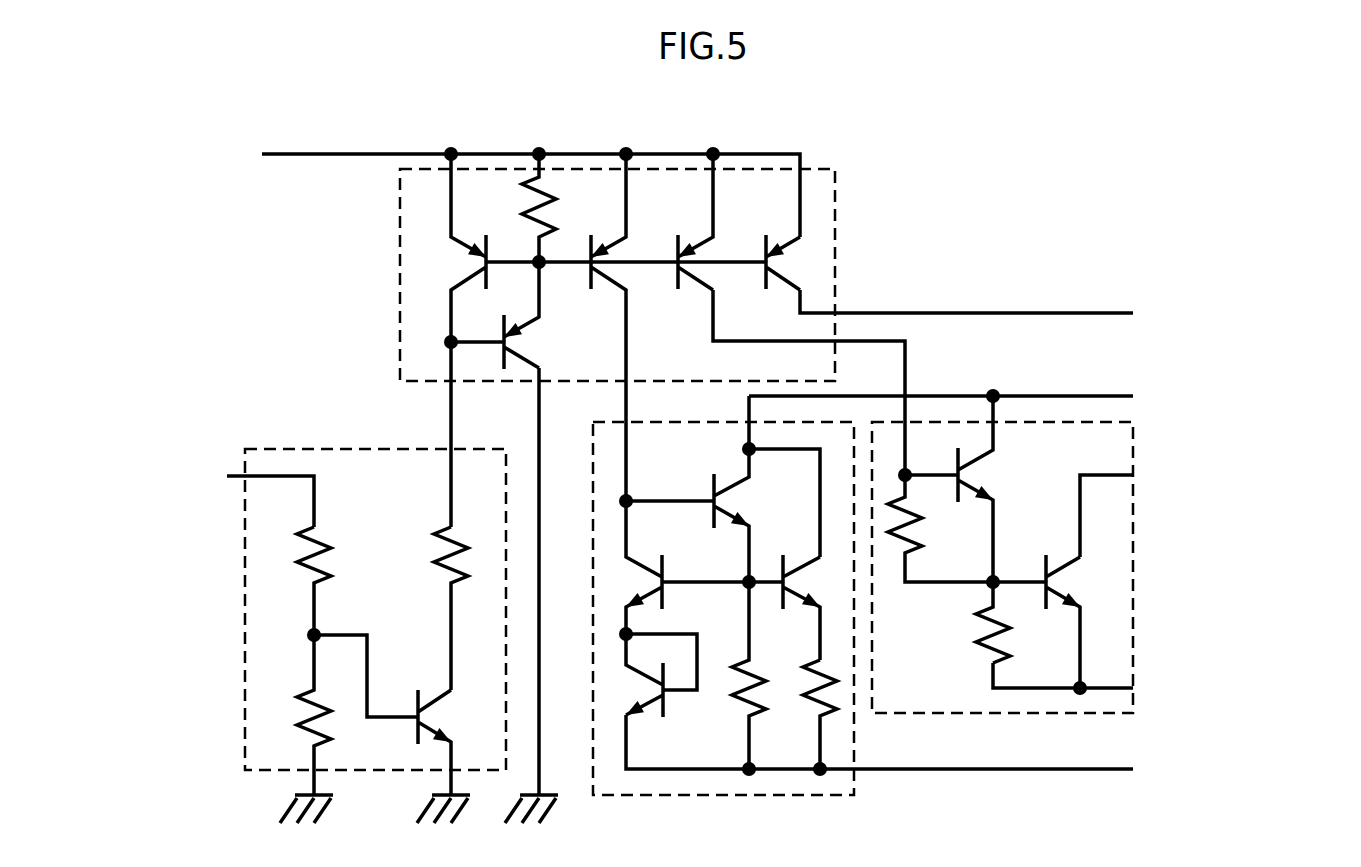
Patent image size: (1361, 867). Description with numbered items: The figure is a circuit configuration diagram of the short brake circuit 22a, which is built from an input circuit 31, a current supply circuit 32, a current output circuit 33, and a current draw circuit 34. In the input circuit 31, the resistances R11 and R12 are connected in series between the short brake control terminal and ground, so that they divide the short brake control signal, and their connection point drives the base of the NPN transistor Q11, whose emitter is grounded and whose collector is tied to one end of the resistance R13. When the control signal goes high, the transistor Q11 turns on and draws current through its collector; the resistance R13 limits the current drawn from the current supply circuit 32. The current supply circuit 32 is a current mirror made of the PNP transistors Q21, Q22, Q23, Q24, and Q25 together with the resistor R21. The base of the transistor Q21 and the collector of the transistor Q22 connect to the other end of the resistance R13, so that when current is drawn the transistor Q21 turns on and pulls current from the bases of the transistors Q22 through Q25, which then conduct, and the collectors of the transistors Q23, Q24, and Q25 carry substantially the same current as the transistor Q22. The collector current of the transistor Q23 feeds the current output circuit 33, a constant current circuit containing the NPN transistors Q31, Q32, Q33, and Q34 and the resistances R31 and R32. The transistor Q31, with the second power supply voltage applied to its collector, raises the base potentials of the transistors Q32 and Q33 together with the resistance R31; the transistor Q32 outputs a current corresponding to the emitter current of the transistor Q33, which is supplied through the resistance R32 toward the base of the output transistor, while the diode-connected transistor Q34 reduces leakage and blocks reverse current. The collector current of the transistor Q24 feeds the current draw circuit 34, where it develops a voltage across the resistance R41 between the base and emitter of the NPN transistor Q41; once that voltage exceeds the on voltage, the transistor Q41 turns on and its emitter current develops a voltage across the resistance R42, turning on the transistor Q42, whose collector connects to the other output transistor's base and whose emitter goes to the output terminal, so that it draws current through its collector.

The short brake circuit 22a is at (1190, 92).
The input circuit 31 is at (312, 447).
The current supply circuit 32 is at (398, 220).
The current output circuit 33 is at (607, 422).
The current draw circuit 34 is at (922, 717).
The transistor Q11 is at (454, 742).
The resistance R11 is at (293, 581).
The resistance R12 is at (292, 715).
The resistance R13 is at (431, 608).
The transistor Q21 is at (541, 315).
The transistor Q22 is at (451, 248).
The transistor Q23 is at (594, 327).
The transistor Q24 is at (680, 222).
The transistor Q25 is at (767, 247).
The resistor R21 is at (517, 208).
The transistor Q31 is at (750, 515).
The transistor Q32 is at (815, 607).
The transistor Q33 is at (629, 567).
The transistor Q34 is at (630, 675).
The resistance R31 is at (736, 675).
The resistance R32 is at (806, 703).
The transistor Q41 is at (997, 489).
The transistor Q42 is at (1084, 621).
The resistance R41 is at (940, 528).
The resistance R42 is at (1015, 622).